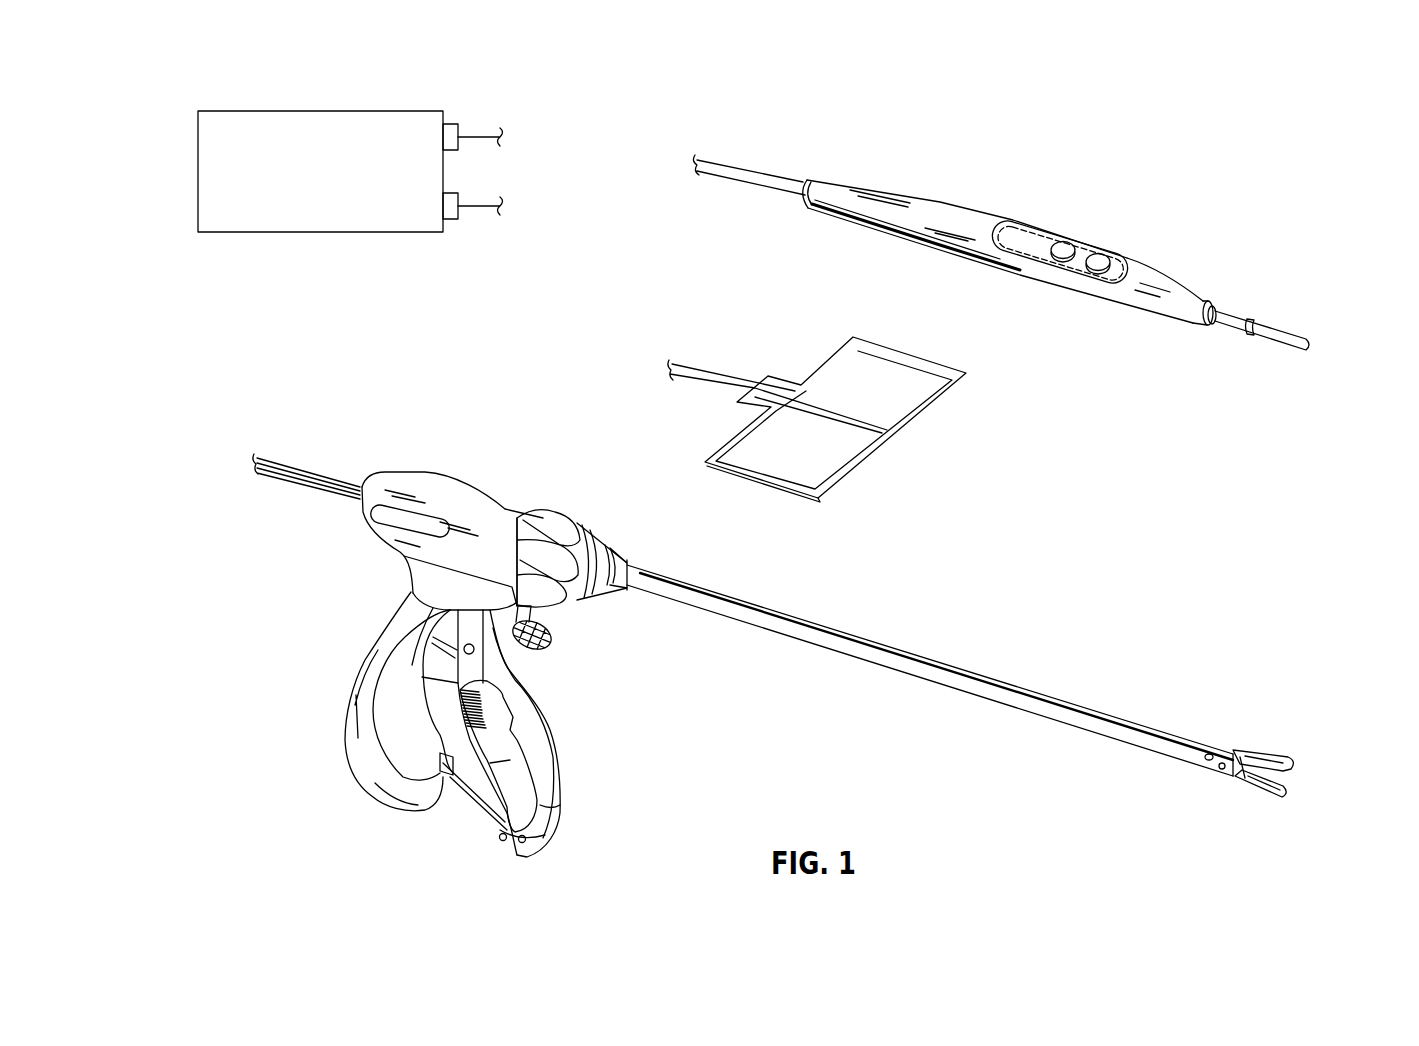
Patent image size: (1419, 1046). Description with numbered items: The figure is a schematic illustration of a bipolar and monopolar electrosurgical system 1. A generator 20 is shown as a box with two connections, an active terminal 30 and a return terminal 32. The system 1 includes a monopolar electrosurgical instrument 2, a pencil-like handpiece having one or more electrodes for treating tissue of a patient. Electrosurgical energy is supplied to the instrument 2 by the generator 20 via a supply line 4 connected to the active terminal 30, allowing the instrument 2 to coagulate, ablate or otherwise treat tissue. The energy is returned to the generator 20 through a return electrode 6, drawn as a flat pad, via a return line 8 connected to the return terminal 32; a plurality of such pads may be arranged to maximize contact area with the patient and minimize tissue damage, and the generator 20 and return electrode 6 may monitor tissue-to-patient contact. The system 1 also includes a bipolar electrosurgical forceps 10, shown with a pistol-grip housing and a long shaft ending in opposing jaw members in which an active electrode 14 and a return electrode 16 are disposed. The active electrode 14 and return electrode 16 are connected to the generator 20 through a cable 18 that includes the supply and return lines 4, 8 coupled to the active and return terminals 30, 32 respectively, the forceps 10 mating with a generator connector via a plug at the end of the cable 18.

The electrosurgical system 1 is at (1092, 142).
The monopolar electrosurgical instrument 2 is at (1143, 275).
The supply line 4 is at (742, 168).
The return electrode 6 is at (752, 484).
The return line 8 is at (705, 367).
The bipolar electrosurgical forceps 10 is at (1272, 722).
The active electrode 14 is at (1291, 768).
The return electrode 16 is at (1284, 787).
The cable 18 is at (327, 478).
The generator 20 is at (327, 111).
The active terminal 30 is at (452, 124).
The return terminal 32 is at (452, 219).